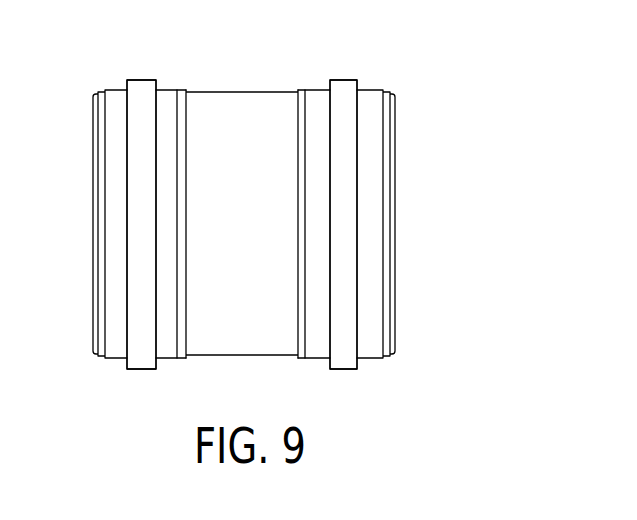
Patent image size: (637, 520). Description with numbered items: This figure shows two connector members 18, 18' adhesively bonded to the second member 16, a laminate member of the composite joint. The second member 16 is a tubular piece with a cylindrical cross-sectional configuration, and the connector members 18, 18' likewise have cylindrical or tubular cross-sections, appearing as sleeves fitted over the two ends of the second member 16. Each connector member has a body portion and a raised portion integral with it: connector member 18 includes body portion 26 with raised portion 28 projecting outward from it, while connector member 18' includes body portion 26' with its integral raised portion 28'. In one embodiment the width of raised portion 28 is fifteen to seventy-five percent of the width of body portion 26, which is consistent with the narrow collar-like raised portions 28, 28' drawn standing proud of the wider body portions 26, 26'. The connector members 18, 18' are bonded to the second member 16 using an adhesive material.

The second member 16 is at (242, 343).
The connector member 18 is at (158, 193).
The connector member 18' is at (363, 193).
The body portion 26 is at (137, 196).
The body portion 26' is at (342, 197).
The raised portion 28 is at (135, 200).
The raised portion 28' is at (335, 200).